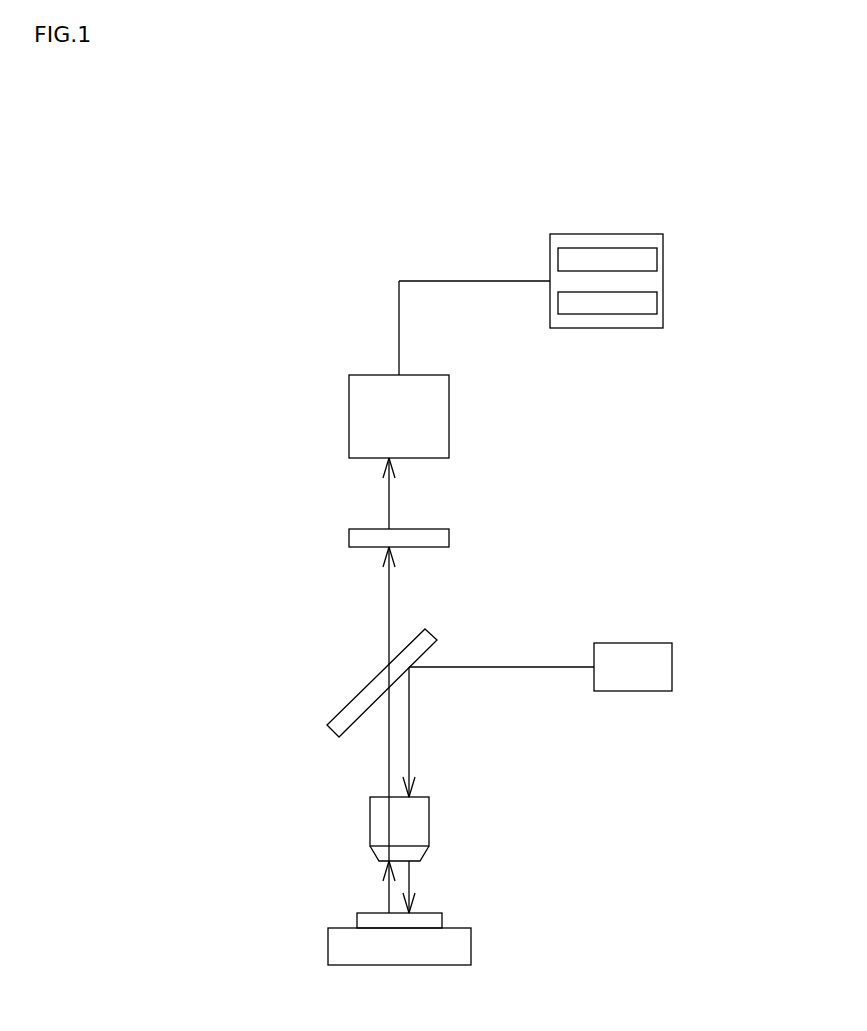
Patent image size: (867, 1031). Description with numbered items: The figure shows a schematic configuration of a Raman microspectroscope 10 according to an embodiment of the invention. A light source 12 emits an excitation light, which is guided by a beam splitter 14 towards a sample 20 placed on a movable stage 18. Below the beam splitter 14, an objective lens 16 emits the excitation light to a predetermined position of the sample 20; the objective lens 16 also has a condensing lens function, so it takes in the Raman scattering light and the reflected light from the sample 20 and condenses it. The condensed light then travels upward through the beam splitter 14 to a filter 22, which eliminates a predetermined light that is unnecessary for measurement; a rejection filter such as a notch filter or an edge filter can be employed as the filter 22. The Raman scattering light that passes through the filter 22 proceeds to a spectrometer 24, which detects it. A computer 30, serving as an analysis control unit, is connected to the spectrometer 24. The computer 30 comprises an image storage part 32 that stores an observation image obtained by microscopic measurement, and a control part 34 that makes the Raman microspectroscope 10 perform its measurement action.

The Raman microspectroscope 10 is at (433, 226).
The light source 12 is at (632, 643).
The beam splitter 14 is at (435, 632).
The objective lens 16 is at (431, 819).
The movable stage 18 is at (473, 943).
The sample 20 is at (442, 912).
The filter 22 is at (451, 535).
The spectrometer 24 is at (451, 418).
The computer 30 is at (605, 234).
The image storage part 32 is at (661, 257).
The control part 34 is at (661, 300).